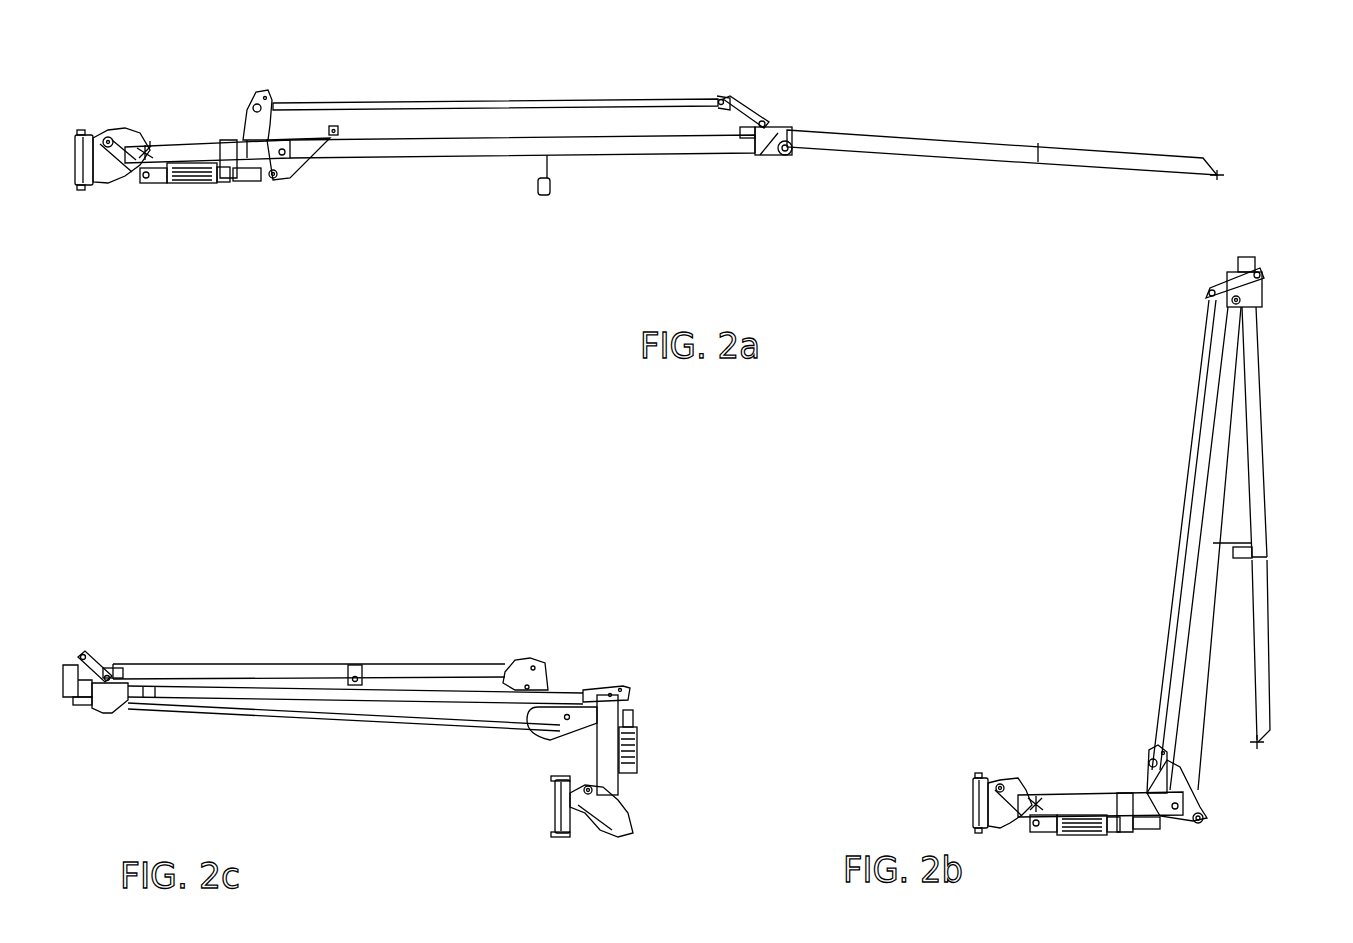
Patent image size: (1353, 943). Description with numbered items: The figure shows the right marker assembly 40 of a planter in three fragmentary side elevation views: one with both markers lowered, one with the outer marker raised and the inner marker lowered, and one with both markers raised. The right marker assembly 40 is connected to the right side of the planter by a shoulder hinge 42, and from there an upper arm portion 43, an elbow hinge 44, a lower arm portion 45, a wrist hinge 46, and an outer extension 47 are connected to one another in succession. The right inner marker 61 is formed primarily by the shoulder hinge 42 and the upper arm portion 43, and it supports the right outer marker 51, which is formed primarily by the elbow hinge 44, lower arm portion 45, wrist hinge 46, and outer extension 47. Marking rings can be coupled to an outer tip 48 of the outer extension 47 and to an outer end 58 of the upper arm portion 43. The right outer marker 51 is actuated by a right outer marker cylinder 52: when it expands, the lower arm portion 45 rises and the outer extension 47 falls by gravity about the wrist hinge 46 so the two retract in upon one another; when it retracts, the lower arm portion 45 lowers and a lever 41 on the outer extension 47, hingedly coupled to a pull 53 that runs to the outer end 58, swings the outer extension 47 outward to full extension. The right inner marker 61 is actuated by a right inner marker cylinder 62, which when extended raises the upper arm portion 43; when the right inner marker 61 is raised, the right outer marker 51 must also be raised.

In FIG. 2a, the right marker assembly 40 is at (527, 246).
In FIG. 2b, the right marker assembly 40 is at (1050, 486).
In FIG. 2c, the right marker assembly 40 is at (393, 550).
In FIG. 2a, the lever 41 is at (771, 158).
In FIG. 2b, the lever 41 is at (1233, 271).
In FIG. 2c, the lever 41 is at (99, 658).
In FIG. 2a, the shoulder hinge 42 is at (101, 110).
In FIG. 2b, the shoulder hinge 42 is at (961, 798).
In FIG. 2c, the shoulder hinge 42 is at (545, 807).
In FIG. 2a, the upper arm portion 43 is at (205, 141).
In FIG. 2b, the upper arm portion 43 is at (1099, 793).
In FIG. 2c, the upper arm portion 43 is at (642, 750).
In FIG. 2b, the elbow hinge 44 is at (1213, 830).
In FIG. 2c, the elbow hinge 44 is at (645, 668).
In FIG. 2a, the lower arm portion 45 is at (462, 160).
In FIG. 2b, the lower arm portion 45 is at (1182, 555).
In FIG. 2c, the lower arm portion 45 is at (300, 712).
In FIG. 2a, the wrist hinge 46 is at (775, 120).
In FIG. 2b, the wrist hinge 46 is at (1205, 270).
In FIG. 2c, the wrist hinge 46 is at (73, 703).
In FIG. 2a, the outer extension 47 is at (986, 140).
In FIG. 2b, the outer extension 47 is at (1260, 397).
In FIG. 2c, the outer extension 47 is at (282, 663).
In FIG. 2a, the outer tip 48 is at (1222, 168).
In FIG. 2b, the outer tip 48 is at (1273, 748).
In FIG. 2c, the outer tip 48 is at (550, 667).
In FIG. 2a, the right outer marker 51 is at (1035, 163).
In FIG. 2b, the right outer marker 51 is at (1229, 547).
In FIG. 2c, the right outer marker 51 is at (349, 618).
In FIG. 2a, the right outer marker cylinder 52 is at (252, 185).
In FIG. 2b, the right outer marker cylinder 52 is at (1162, 828).
In FIG. 2a, the pull 53 is at (510, 103).
In FIG. 2b, the pull 53 is at (1197, 420).
In FIG. 2c, the pull 53 is at (487, 733).
In FIG. 2a, the outer end 58 is at (249, 88).
In FIG. 2a, the right inner marker 61 is at (303, 188).
In FIG. 2b, the right inner marker 61 is at (1079, 862).
In FIG. 2c, the right inner marker 61 is at (711, 650).
In FIG. 2a, the right inner marker cylinder 62 is at (186, 185).
In FIG. 2b, the right inner marker cylinder 62 is at (1100, 837).
In FIG. 2c, the right inner marker cylinder 62 is at (637, 767).